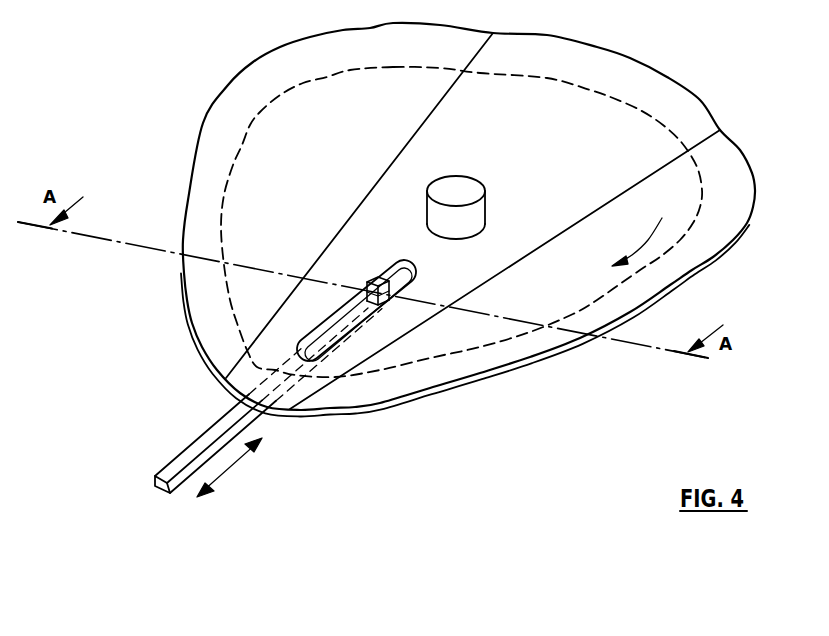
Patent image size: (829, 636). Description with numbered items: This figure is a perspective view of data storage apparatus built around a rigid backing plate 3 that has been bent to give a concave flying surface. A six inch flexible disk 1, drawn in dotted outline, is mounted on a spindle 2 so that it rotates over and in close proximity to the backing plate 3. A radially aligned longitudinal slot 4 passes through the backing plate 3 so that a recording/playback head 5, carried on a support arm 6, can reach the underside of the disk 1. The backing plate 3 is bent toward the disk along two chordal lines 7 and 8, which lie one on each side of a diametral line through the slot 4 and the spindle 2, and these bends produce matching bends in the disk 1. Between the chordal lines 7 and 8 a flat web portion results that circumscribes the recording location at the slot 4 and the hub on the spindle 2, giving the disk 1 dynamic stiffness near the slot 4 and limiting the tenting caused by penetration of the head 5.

The flexible disk 1 is at (620, 120).
The spindle 2 is at (470, 203).
The backing plate 3 is at (737, 172).
The longitudinal slot 4 is at (410, 282).
The recording/playback head 5 is at (380, 278).
The support arm 6 is at (203, 434).
The chordal line 7 is at (346, 222).
The chordal line 8 is at (541, 244).